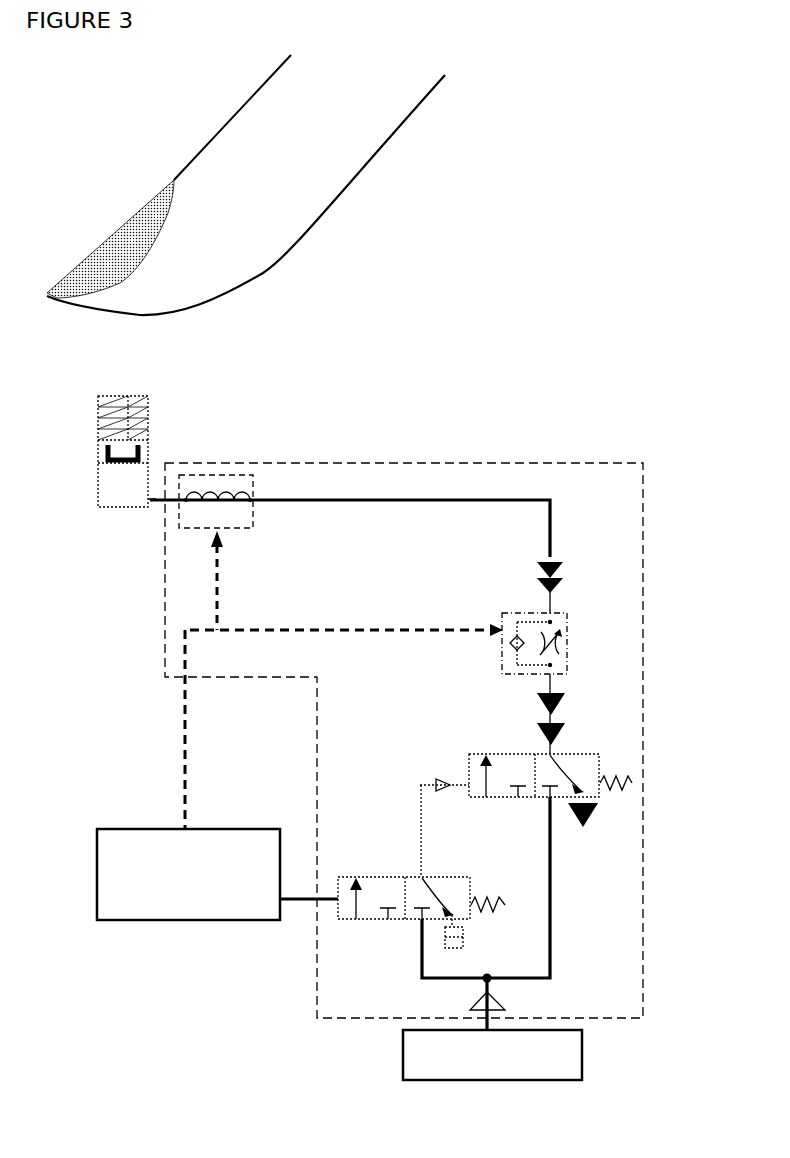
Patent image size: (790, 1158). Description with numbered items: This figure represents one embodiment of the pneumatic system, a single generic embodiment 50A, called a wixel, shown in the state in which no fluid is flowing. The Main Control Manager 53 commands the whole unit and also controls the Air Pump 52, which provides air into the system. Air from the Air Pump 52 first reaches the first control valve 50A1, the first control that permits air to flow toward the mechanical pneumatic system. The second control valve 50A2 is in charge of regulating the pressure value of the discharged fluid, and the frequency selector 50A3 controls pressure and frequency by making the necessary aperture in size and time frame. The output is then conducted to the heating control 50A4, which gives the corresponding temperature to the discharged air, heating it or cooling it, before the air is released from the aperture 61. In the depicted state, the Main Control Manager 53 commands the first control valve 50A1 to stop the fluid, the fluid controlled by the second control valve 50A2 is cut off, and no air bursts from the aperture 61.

The aperture 61 is at (102, 393).
The generic embodiment 50A is at (645, 557).
The first control valve 50A1 is at (370, 922).
The second control valve 50A2 is at (600, 771).
The frequency selector 50A3 is at (580, 631).
The heating control 50A4 is at (193, 528).
The Air Pump 52 is at (582, 1068).
The Main Control Manager 53 is at (137, 922).